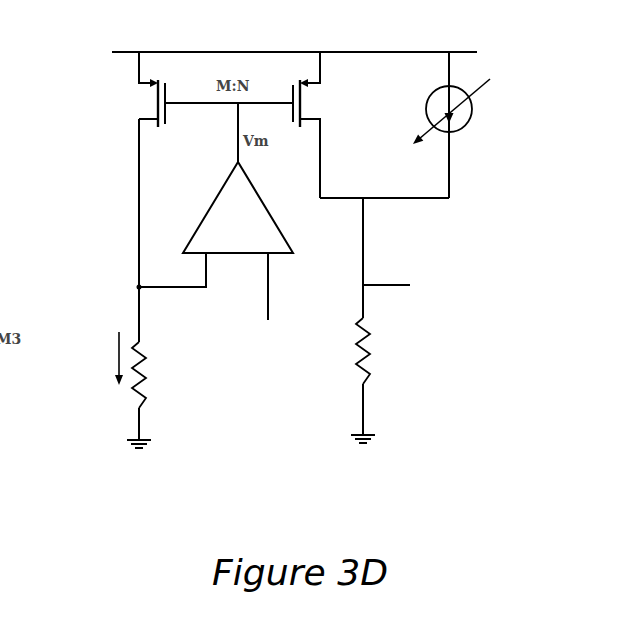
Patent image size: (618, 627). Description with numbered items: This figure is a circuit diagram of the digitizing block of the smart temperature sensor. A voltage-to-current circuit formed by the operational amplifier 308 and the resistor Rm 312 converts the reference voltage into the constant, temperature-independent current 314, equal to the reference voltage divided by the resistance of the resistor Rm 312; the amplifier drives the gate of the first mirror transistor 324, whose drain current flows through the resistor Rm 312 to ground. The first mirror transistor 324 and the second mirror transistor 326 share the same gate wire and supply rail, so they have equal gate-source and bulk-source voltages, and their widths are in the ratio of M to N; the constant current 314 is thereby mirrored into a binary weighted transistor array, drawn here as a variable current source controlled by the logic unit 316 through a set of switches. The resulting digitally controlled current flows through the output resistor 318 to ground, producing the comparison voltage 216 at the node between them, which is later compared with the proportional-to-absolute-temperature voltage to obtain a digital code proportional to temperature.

The transistor M4 324 is at (100, 92).
The transistor MP0 326 is at (338, 88).
The operational amplifier 308 is at (217, 197).
The logic unit 316 is at (465, 127).
The constant current I4 314 is at (119, 330).
The resistor Rm 312 is at (150, 343).
The comparison voltage VO 216 is at (410, 287).
The resistor RO 318 is at (368, 384).